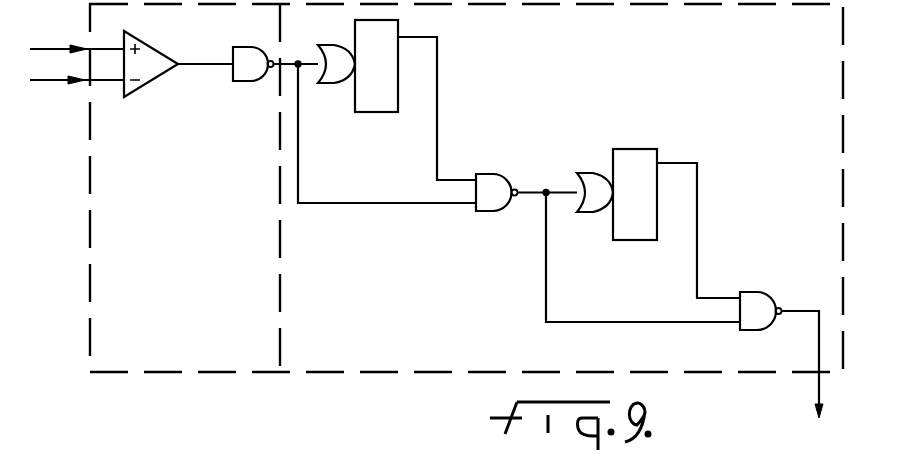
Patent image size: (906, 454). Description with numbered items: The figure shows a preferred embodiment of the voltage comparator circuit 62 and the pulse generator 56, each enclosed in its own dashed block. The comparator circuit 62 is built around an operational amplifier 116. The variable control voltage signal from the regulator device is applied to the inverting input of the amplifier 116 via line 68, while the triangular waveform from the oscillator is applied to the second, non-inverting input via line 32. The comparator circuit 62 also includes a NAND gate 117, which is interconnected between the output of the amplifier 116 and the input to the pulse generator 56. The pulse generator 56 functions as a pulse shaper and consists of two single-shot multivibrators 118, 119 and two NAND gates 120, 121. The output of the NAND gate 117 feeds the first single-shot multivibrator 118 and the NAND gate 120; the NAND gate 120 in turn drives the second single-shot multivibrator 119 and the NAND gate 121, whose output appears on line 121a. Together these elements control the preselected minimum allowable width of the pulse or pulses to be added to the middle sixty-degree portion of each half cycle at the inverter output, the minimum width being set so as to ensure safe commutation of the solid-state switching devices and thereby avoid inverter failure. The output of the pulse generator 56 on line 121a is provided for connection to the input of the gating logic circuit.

The line 32 is at (70, 45).
The line 68 is at (60, 83).
The operational amplifier 116 is at (152, 84).
The NAND gate 117 is at (234, 77).
The single-shot multivibrator 118 is at (374, 112).
The single-shot multivibrator 119 is at (640, 149).
The NAND gate 120 is at (490, 212).
The NAND gate 121 is at (755, 292).
The line 121a is at (816, 403).
The voltage comparator circuit 62 is at (218, 372).
The pulse generator 56 is at (438, 372).